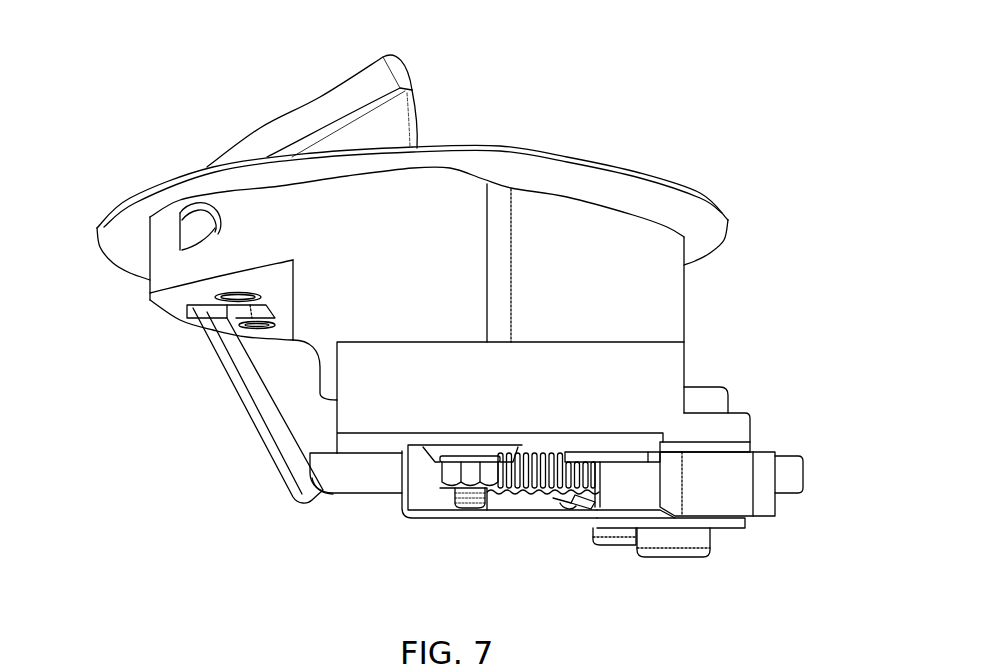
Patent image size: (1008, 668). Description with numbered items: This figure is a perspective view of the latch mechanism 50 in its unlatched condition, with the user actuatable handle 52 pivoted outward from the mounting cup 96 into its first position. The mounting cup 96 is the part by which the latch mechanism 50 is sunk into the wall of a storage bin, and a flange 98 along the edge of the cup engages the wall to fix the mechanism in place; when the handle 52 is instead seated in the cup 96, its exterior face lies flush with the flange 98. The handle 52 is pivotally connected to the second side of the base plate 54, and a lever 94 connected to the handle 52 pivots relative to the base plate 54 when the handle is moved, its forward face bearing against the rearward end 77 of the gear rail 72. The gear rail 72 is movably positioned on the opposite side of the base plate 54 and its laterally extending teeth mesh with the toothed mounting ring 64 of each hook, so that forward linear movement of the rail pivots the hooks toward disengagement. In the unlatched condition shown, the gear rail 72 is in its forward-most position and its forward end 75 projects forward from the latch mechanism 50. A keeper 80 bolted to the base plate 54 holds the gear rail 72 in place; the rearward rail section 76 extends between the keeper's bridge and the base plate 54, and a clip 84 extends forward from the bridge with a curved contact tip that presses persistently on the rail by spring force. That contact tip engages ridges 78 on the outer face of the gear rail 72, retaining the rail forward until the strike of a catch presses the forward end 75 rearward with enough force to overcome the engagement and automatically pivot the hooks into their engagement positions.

The latch mechanism 50 is at (617, 98).
The user actuatable handle 52 is at (320, 103).
The base plate 54 is at (667, 362).
The mounting ring 64 is at (745, 502).
The gear rail 72 is at (519, 493).
The forward end of the gear rail 75 is at (805, 473).
The rearward rail section 76 is at (378, 496).
The rearward end of the gear rail 77 is at (328, 498).
The ridges 78 is at (570, 504).
The keeper 80 is at (413, 530).
The clip 84 is at (574, 513).
The lever 94 is at (278, 451).
The mounting cup 96 is at (160, 272).
The flange 98 is at (118, 230).